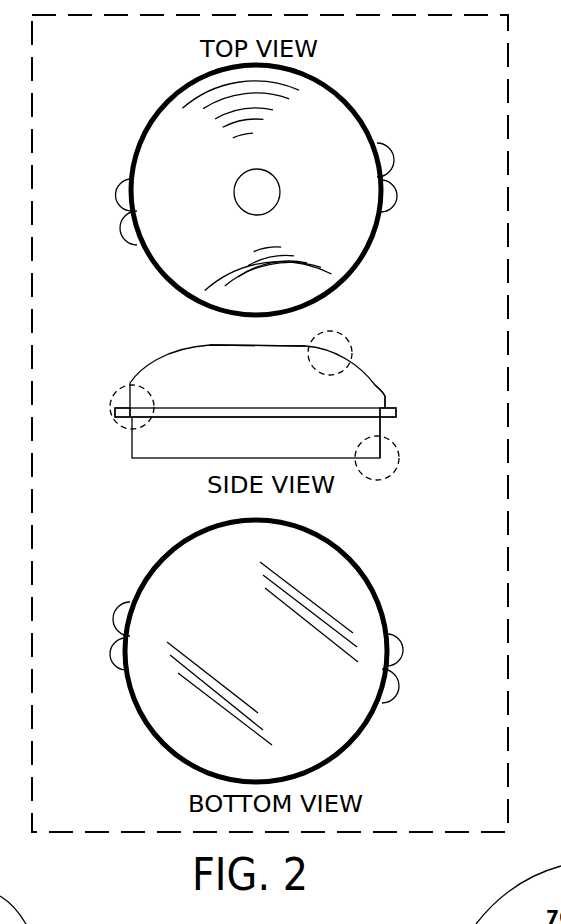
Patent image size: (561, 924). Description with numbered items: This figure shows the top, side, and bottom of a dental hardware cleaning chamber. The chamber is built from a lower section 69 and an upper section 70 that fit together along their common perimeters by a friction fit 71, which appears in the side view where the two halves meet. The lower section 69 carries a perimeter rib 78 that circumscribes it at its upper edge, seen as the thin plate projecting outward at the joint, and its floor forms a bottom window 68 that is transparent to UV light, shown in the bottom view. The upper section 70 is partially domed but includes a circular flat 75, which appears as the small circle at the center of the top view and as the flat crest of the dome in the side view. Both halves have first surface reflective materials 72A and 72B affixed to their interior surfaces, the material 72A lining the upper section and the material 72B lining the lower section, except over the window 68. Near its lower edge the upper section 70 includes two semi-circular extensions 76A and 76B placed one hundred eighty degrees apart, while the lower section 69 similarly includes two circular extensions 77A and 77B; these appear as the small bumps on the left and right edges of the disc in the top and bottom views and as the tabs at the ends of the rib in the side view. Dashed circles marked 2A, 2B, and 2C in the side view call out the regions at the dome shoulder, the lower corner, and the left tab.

The upper section 70 is at (345, 171).
The circular flat 75 is at (234, 180).
The first surface reflective material 72A is at (220, 348).
The friction fit 71 is at (382, 402).
The perimeter rib 78 is at (200, 418).
The bottom window 68 is at (170, 459).
The lower section 69 is at (218, 432).
The first surface reflective material 72B is at (379, 433).
The semi-circular extension 76A is at (118, 190).
The circular extension 77A is at (120, 228).
The semi-circular extension 76B is at (391, 196).
The circular extension 77B is at (388, 163).
The detail region 2A is at (352, 339).
The detail region 2B is at (382, 476).
The detail region 2C is at (108, 409).